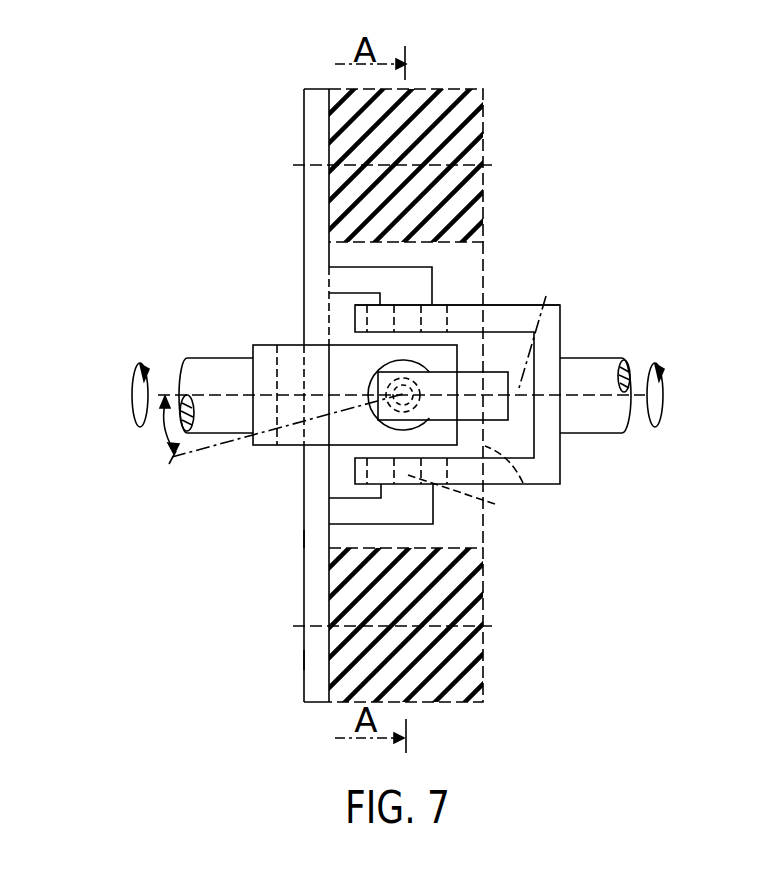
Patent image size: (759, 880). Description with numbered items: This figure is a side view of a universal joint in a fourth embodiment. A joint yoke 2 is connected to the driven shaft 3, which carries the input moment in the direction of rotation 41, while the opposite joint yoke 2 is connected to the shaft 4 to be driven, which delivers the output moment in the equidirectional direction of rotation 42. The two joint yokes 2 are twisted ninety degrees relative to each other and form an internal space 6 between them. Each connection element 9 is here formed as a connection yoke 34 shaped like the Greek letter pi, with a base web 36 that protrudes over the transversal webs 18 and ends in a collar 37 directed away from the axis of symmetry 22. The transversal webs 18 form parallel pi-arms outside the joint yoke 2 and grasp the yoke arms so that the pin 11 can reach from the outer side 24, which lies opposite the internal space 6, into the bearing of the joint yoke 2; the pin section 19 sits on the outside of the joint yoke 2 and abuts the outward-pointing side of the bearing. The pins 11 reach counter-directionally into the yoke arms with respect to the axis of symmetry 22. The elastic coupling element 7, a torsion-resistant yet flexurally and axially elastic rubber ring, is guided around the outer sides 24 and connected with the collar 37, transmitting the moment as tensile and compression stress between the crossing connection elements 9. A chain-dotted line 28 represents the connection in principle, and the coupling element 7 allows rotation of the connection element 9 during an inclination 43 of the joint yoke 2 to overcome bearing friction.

The joint yoke 2 is at (553, 470).
The driven shaft 3 is at (594, 376).
The shaft to be driven 4 is at (222, 368).
The internal space 6 is at (523, 483).
The elastic coupling element 7 is at (478, 665).
The connection element 9 is at (278, 395).
The pin 11 is at (495, 504).
The transversal web 18 is at (362, 513).
The pin section 19 is at (407, 493).
The axis of symmetry 22 is at (539, 328).
The outer side 24 is at (497, 305).
The chain-dotted line 28 is at (293, 627).
The connection yoke 34 is at (293, 395).
The base web 36 is at (313, 535).
The collar 37 is at (312, 658).
The direction of rotation 41 is at (660, 367).
The direction of rotation 42 is at (143, 368).
The inclination 43 is at (163, 432).